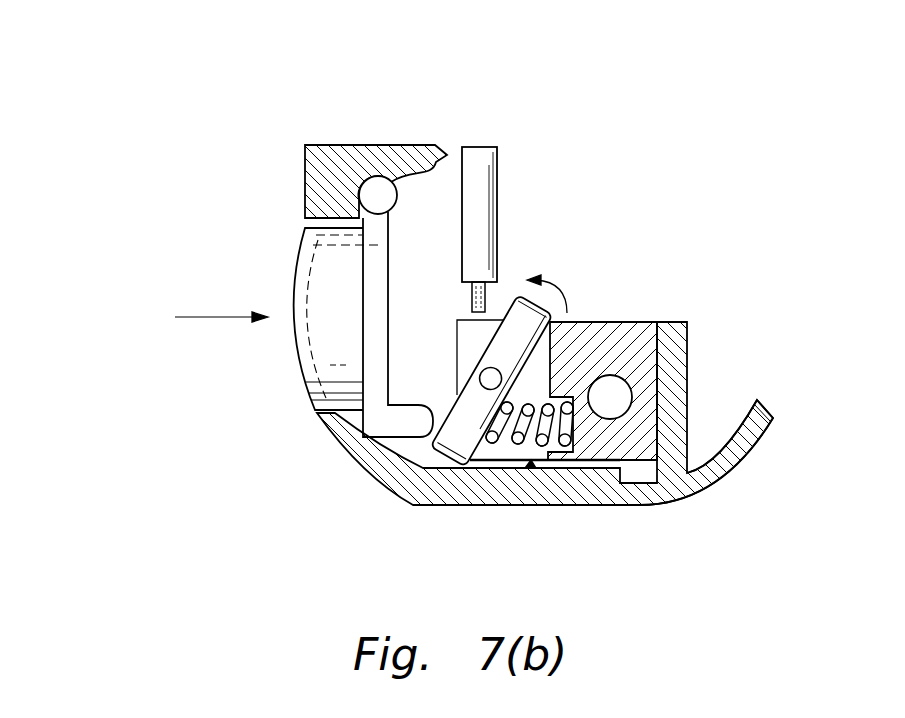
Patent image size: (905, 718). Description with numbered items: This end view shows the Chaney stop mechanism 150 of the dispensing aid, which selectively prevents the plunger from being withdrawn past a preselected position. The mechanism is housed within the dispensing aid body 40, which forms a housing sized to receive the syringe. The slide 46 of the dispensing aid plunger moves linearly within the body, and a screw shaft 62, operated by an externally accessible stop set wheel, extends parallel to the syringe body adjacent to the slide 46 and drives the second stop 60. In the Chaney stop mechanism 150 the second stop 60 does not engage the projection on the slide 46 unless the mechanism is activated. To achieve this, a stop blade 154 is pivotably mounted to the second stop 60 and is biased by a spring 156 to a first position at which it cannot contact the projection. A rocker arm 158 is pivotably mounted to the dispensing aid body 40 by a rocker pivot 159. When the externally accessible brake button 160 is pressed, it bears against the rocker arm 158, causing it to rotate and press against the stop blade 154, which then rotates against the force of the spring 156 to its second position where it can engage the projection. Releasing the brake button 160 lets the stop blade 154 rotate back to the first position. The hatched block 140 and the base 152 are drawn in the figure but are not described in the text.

The Chaney stop mechanism 150 is at (232, 162).
The upper retaining block 140 is at (355, 152).
The rocker pivot 159 is at (378, 185).
The slide 46 is at (498, 172).
The second stop 60 is at (608, 332).
The screw shaft 62 is at (615, 412).
The brake button 160 is at (308, 377).
The rocker arm 158 is at (390, 422).
The stop blade 154 is at (430, 450).
The spring 156 is at (533, 465).
The base plate 152 is at (637, 488).
The dispensing aid body 40 is at (728, 470).